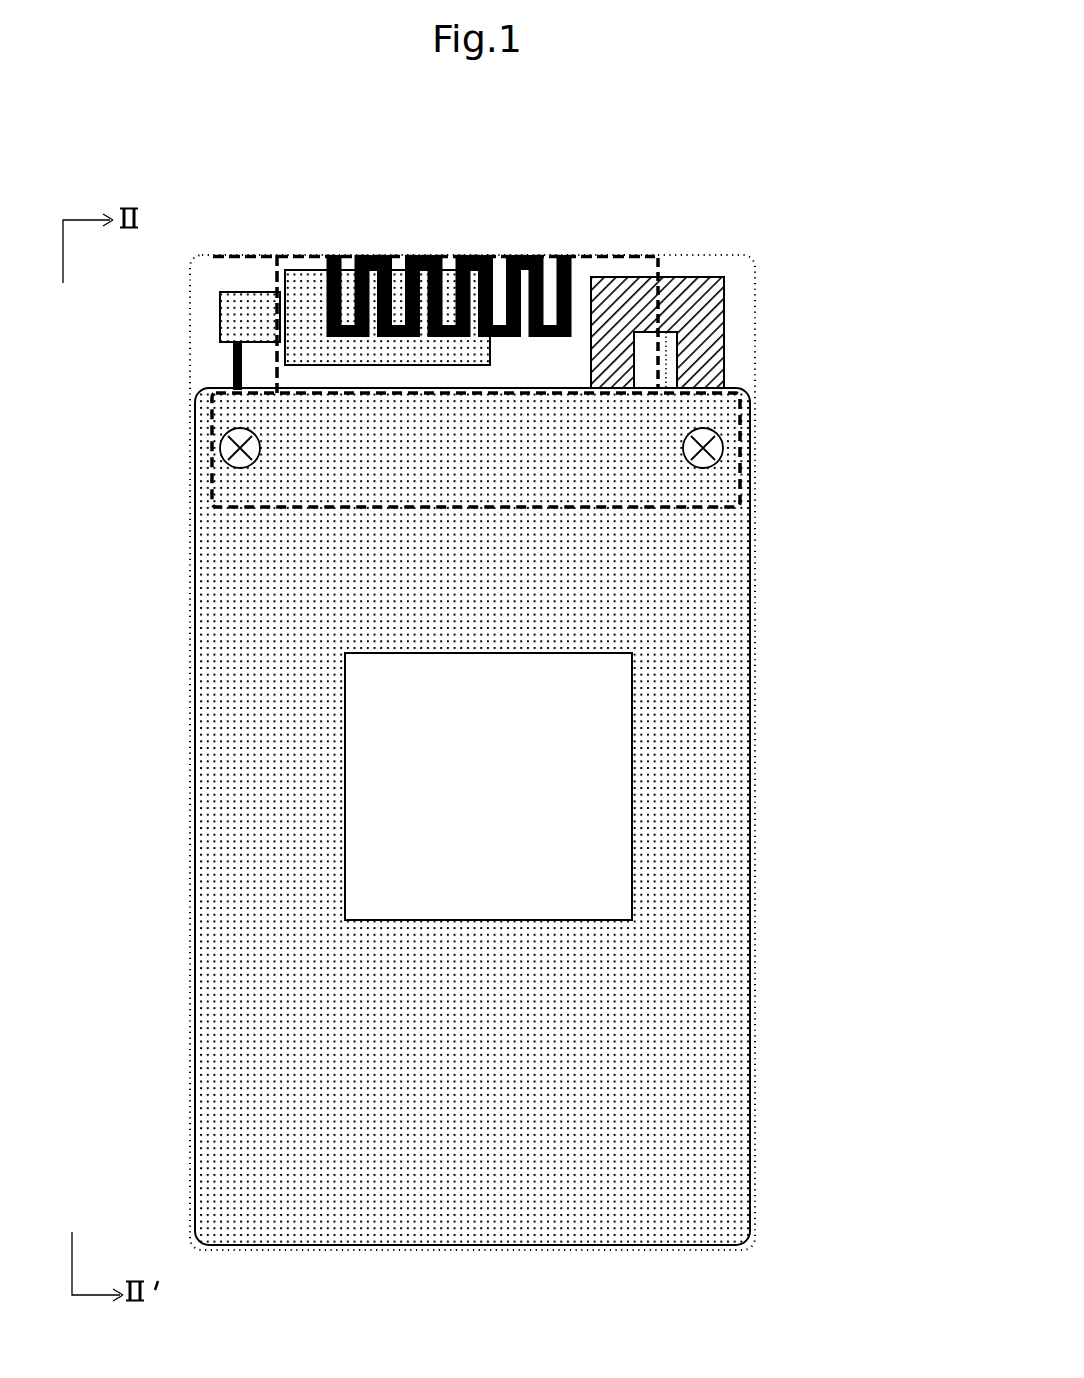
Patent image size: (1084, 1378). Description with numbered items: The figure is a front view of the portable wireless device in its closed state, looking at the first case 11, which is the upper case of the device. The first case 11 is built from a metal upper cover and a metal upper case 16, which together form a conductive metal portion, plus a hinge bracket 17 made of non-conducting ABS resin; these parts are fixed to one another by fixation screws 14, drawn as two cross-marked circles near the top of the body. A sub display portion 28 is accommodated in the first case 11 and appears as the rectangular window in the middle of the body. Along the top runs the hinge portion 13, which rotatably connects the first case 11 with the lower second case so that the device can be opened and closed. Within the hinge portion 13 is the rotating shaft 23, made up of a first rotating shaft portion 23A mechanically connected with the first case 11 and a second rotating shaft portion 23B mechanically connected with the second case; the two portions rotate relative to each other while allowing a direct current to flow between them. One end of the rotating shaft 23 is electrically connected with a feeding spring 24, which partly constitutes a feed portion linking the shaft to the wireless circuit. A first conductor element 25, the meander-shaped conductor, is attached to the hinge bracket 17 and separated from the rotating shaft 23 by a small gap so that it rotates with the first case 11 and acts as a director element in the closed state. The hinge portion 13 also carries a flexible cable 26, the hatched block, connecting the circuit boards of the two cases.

The first case 11 is at (852, 404).
The hinge portion 13 is at (852, 377).
The fixation screws 14 is at (225, 448).
The upper case 16 is at (680, 1077).
The hinge bracket 17 is at (585, 263).
The rotating shaft 23 is at (287, 148).
The first rotating shaft portion 23A is at (310, 281).
The second rotating shaft portion 23B is at (244, 316).
The feeding spring 24 is at (233, 357).
The first conductor element 25 is at (480, 258).
The flexible cable 26 is at (703, 297).
The sub display portion 28 is at (573, 687).